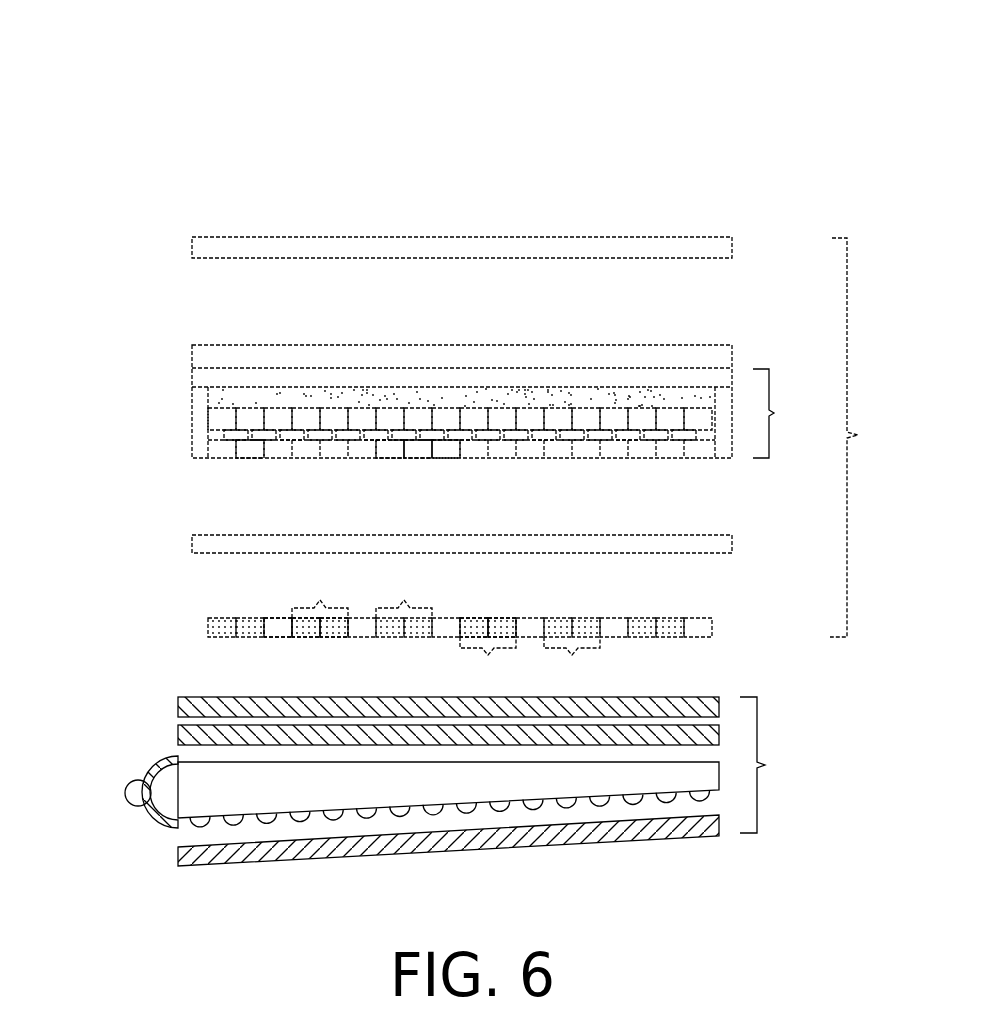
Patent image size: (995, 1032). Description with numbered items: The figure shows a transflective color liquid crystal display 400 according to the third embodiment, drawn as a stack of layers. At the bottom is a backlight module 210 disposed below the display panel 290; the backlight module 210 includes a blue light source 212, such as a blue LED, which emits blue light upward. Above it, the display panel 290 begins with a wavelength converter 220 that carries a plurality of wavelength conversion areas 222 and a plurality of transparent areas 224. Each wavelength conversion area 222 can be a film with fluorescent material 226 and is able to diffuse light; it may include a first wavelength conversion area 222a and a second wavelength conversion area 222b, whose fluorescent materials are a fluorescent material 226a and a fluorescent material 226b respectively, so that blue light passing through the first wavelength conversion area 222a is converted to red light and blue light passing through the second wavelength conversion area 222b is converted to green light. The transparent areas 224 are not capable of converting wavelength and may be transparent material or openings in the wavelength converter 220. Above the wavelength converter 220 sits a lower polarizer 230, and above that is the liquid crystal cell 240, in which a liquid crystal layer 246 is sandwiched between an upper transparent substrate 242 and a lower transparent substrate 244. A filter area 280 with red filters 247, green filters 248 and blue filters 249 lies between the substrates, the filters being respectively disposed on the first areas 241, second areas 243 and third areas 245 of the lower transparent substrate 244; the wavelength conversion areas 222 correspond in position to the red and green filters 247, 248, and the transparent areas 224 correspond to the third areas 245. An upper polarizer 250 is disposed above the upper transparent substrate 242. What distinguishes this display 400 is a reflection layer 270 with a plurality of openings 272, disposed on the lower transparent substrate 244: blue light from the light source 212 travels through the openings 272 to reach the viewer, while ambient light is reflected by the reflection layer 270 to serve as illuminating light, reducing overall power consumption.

The transflective color liquid crystal display 400 is at (150, 98).
The display panel 290 is at (489, 438).
The upper polarizer 250 is at (735, 246).
The filter area 280 is at (490, 345).
The liquid crystal cell 240 is at (464, 384).
The upper transparent substrate 242 is at (192, 380).
The liquid crystal layer 246 is at (222, 400).
The lower transparent substrate 244 is at (200, 448).
The red filters 247 is at (482, 408).
The green filters 248 is at (507, 408).
The blue filters 249 is at (527, 408).
The reflection layer 270 is at (560, 430).
The openings 272 is at (250, 450).
The first areas 241 is at (397, 452).
The second areas 243 is at (423, 455).
The third areas 245 is at (450, 450).
The lower polarizer 230 is at (732, 545).
The wavelength converter 220 is at (208, 628).
The transparent areas 224 is at (280, 628).
The wavelength conversion areas 222 is at (363, 592).
The first wavelength conversion area 222a is at (305, 637).
The second wavelength conversion area 222b is at (335, 637).
The fluorescent material 226 is at (531, 663).
The fluorescent material 226a is at (473, 627).
The fluorescent material 226b is at (502, 628).
The backlight module 210 is at (417, 781).
The blue light source 212 is at (138, 793).